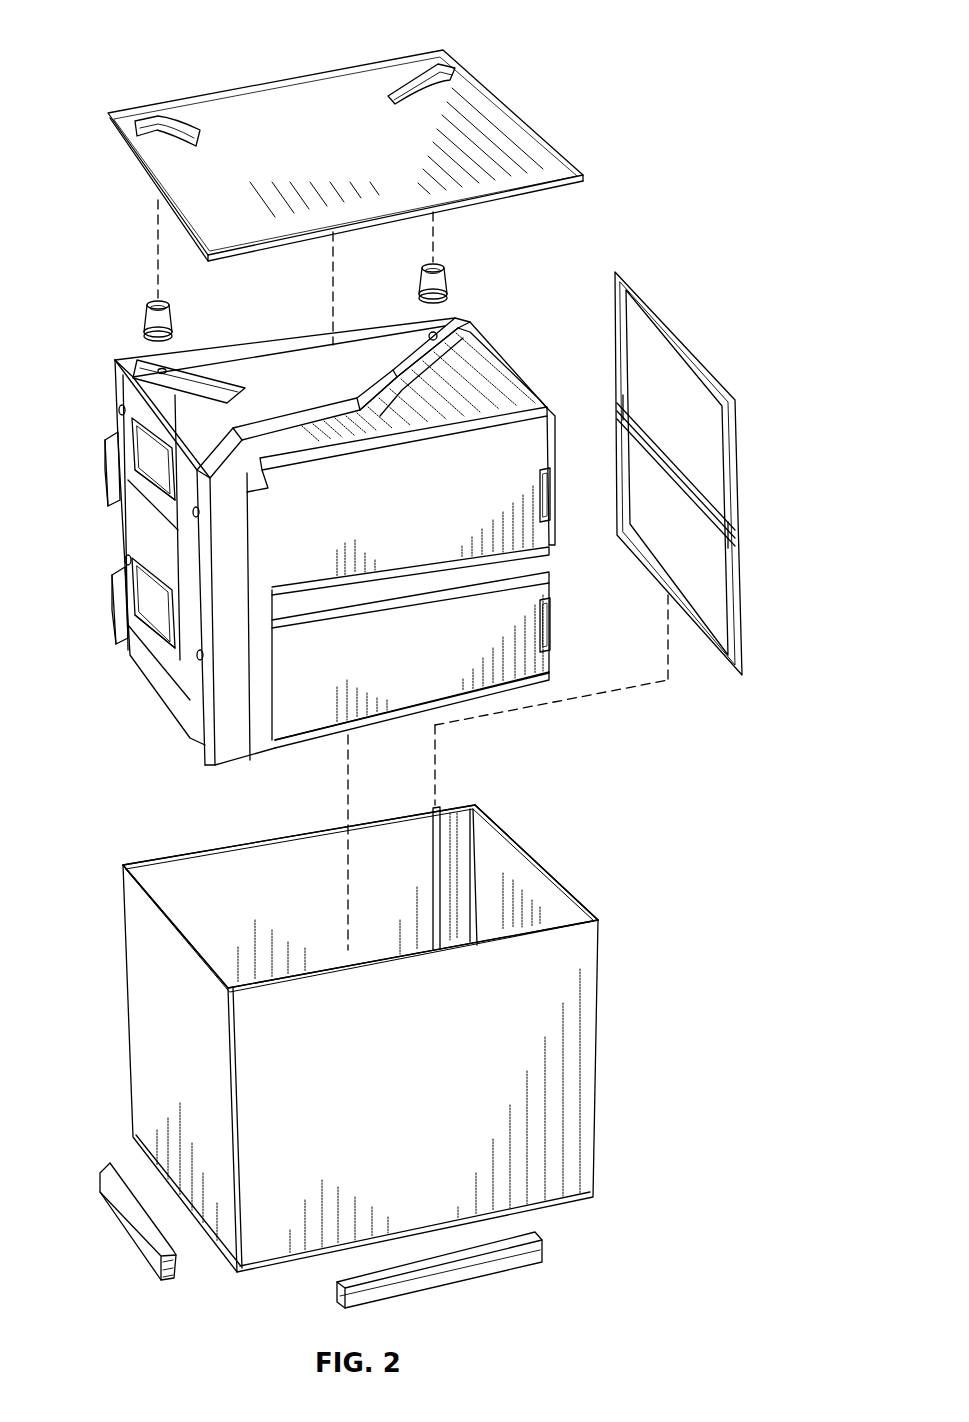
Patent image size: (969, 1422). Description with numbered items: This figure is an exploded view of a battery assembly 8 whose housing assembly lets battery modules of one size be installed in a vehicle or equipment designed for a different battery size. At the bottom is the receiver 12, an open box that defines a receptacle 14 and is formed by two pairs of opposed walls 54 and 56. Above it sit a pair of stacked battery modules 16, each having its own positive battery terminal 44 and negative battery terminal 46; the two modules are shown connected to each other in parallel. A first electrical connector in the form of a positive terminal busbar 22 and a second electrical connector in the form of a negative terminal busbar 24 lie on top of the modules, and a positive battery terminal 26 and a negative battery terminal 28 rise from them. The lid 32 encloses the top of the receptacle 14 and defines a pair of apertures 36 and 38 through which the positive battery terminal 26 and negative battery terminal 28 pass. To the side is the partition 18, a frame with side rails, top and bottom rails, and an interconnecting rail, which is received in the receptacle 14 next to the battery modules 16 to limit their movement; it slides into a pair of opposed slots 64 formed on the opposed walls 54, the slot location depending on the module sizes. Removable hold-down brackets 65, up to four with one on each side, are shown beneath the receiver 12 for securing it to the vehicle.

The battery assembly 8 is at (626, 98).
The receiver 12 is at (600, 1010).
The receptacle 14 is at (492, 832).
The battery module 16 is at (545, 405).
The partition 18 is at (676, 348).
The positive terminal busbar 22 is at (230, 382).
The negative terminal busbar 24 is at (415, 360).
The positive battery terminal 26 is at (146, 318).
The negative battery terminal 28 is at (448, 272).
The lid 32 is at (500, 118).
The aperture 36 is at (168, 120).
The aperture 38 is at (442, 52).
The positive battery terminal 44 is at (108, 432).
The negative battery terminal 46 is at (192, 512).
The opposed walls 54 is at (252, 858).
The opposed walls 56 is at (556, 878).
The slots 64 is at (432, 806).
The hold-down bracket 65 is at (134, 1238).